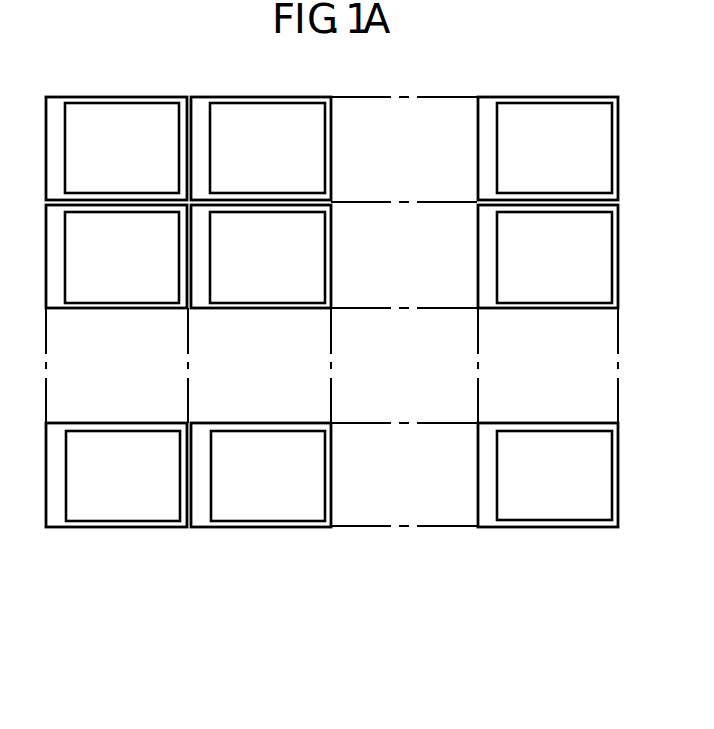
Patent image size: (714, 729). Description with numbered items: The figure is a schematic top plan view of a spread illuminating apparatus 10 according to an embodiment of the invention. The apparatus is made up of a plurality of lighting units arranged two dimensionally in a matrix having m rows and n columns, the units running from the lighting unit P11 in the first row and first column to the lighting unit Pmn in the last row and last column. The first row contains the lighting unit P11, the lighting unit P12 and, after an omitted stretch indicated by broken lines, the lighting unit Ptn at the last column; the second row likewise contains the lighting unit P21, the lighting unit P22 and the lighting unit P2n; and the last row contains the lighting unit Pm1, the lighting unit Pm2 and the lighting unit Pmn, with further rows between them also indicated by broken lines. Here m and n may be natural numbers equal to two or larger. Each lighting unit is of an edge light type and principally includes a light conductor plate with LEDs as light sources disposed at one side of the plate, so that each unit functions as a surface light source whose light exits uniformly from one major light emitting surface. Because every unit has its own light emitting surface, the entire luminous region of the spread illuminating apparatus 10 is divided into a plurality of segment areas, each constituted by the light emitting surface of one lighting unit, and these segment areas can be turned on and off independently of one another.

The spread illuminating apparatus 10 is at (332, 383).
The lighting unit P11 is at (116, 148).
The lighting unit P12 is at (261, 148).
The lighting unit Ptn is at (548, 148).
The lighting unit P21 is at (116, 256).
The lighting unit P22 is at (261, 256).
The lighting unit P2n is at (548, 256).
The lighting unit Pm1 is at (116, 475).
The lighting unit Pm2 is at (261, 475).
The lighting unit Pmn is at (548, 475).